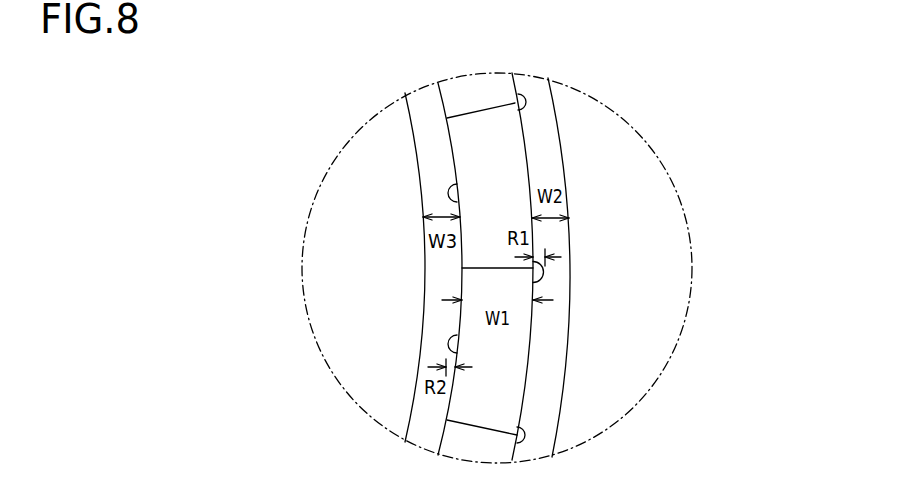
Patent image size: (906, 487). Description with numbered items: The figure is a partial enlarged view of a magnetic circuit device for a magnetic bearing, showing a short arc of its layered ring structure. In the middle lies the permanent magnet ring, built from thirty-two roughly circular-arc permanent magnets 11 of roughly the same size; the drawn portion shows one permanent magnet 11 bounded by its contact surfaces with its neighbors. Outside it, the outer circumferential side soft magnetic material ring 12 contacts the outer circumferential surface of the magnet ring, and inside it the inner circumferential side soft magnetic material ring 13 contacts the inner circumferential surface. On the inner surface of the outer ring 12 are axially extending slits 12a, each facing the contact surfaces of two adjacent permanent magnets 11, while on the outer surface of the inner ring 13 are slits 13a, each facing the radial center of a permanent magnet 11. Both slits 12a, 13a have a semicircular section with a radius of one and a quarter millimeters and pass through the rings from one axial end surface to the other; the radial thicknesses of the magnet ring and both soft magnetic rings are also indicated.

The permanent magnet 11 is at (495, 150).
The outer circumferential side soft magnetic material ring 12 is at (552, 150).
The slit 12a is at (661, 267).
The inner circumferential side soft magnetic material ring 13 is at (372, 275).
The slit 13a is at (322, 268).